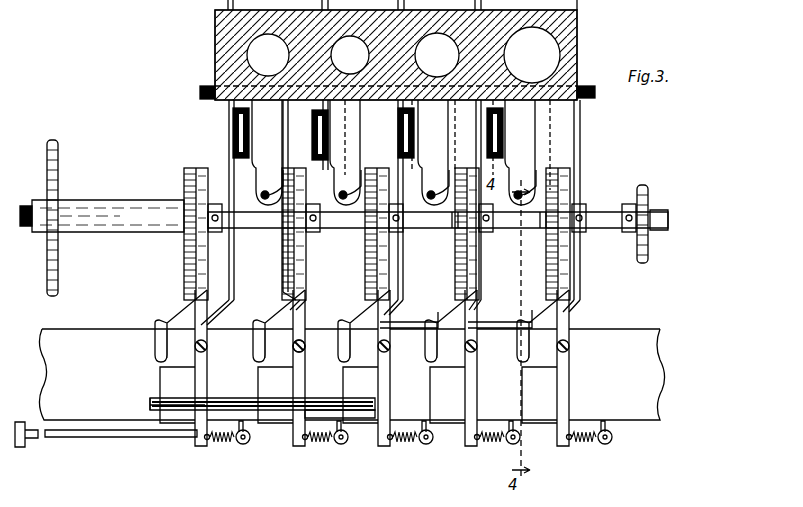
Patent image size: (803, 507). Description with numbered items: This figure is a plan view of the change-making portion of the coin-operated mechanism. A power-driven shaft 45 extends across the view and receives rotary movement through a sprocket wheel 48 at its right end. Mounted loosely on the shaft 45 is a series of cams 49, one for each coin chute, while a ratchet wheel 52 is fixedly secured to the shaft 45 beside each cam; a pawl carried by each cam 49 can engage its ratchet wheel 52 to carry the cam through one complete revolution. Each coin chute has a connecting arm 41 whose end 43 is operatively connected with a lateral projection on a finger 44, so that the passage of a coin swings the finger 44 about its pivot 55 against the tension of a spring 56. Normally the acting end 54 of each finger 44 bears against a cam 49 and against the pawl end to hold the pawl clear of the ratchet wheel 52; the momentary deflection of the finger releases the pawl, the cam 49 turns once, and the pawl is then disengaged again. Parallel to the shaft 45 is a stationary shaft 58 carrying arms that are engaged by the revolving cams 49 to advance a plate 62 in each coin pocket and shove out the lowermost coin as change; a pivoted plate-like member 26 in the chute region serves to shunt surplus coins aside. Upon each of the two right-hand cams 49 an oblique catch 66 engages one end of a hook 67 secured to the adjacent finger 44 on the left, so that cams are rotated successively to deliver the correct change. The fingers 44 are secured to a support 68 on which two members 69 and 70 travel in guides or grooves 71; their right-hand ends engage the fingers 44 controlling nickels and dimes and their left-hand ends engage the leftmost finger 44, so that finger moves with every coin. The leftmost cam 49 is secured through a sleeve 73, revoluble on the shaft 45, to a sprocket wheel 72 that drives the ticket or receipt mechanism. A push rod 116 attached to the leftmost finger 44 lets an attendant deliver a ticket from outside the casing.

The connecting arm 41 is at (218, 6).
The plate-like member 26 is at (235, 125).
The stationary shaft 58 is at (200, 90).
The plate 62 is at (368, 134).
The ratchet wheel 52 is at (198, 168).
The sprocket wheel 72 is at (58, 176).
The sleeve 73 is at (130, 206).
The cam 49 is at (184, 264).
The shaft 45 is at (438, 228).
The catch 66 is at (435, 230).
The sprocket wheel 48 is at (648, 195).
The acting end 54 is at (304, 292).
The finger 44 is at (207, 380).
The end of connecting arm 43 is at (160, 352).
The support 68 is at (351, 374).
The member 69 is at (258, 400).
The member 70 is at (350, 410).
The guides or grooves 71 is at (163, 398).
The pivot 55 is at (303, 352).
The spring 56 is at (320, 446).
The push rod 116 is at (78, 438).
The hook 67 is at (410, 324).